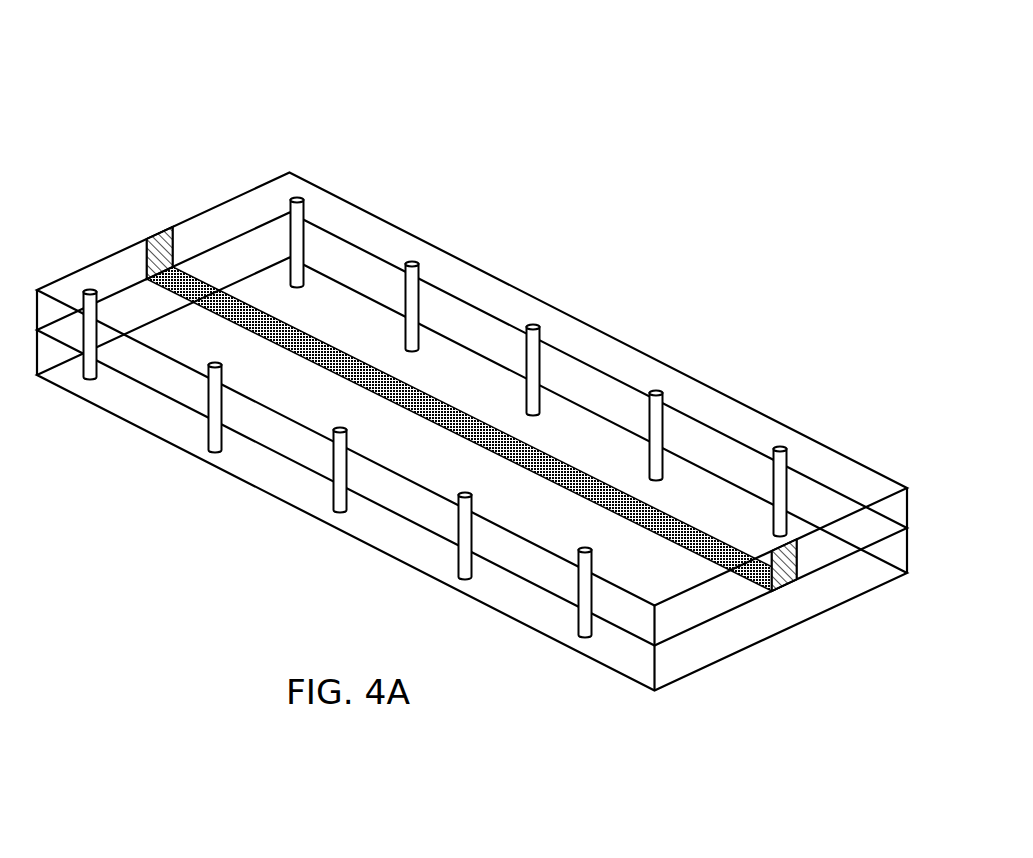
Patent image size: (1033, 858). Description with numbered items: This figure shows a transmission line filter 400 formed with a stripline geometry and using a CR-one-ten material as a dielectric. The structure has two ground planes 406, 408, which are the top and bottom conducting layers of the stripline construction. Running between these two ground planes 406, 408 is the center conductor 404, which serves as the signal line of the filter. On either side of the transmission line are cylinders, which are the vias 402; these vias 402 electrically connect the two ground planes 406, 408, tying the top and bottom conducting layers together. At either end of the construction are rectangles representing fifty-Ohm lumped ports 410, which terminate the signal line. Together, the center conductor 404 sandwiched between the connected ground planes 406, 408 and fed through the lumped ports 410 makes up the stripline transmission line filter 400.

The transmission line filter 400 is at (164, 32).
The vias 402 is at (534, 327).
The center conductor 404 is at (341, 353).
The ground plane 406 is at (879, 472).
The ground plane 408 is at (752, 645).
The lumped ports 410 is at (147, 239).